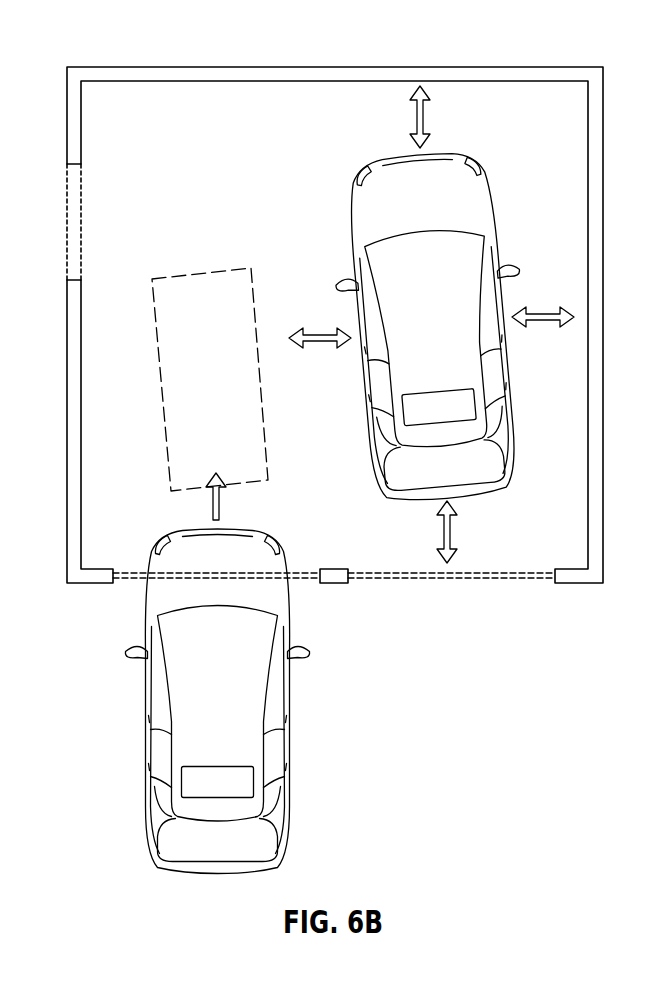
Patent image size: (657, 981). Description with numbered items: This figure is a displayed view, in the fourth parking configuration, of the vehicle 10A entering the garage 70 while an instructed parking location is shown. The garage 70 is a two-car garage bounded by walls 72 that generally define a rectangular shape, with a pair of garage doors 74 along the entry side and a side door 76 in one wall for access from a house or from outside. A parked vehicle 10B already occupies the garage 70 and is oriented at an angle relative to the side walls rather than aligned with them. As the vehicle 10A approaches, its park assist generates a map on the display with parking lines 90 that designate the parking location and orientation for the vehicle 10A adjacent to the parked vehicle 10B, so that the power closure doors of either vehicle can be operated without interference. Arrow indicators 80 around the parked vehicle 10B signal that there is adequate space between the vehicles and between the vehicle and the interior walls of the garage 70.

The vehicle 10A is at (413, 332).
The parked vehicle 10B is at (200, 697).
The garage 70 is at (305, 327).
The walls 72 is at (137, 82).
The garage doors 74 is at (133, 573).
The side door 76 is at (67, 210).
The arrow indicators 80 is at (422, 115).
The parking lines 90 is at (163, 408).